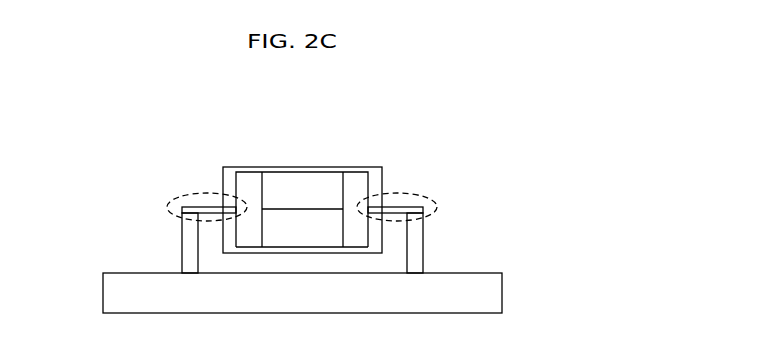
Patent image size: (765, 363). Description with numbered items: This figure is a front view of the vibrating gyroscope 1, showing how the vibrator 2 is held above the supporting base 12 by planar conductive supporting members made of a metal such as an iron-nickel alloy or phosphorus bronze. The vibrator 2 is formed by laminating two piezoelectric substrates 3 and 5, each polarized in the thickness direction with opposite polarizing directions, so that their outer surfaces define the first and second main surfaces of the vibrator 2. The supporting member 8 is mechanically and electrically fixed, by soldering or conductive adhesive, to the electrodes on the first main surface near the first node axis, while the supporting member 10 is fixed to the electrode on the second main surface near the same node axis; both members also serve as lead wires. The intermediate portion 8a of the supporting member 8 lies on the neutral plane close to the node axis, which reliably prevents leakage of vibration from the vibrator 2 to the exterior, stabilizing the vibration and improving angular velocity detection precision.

The vibrating gyroscope 1 is at (118, 157).
The vibrator 2 is at (322, 167).
The piezoelectric substrate 3 is at (302, 192).
The piezoelectric substrate 5 is at (302, 233).
The supporting member 8 is at (252, 167).
The intermediate portion 8a is at (208, 193).
The supporting member 10 is at (353, 253).
The supporting base 12 is at (119, 285).